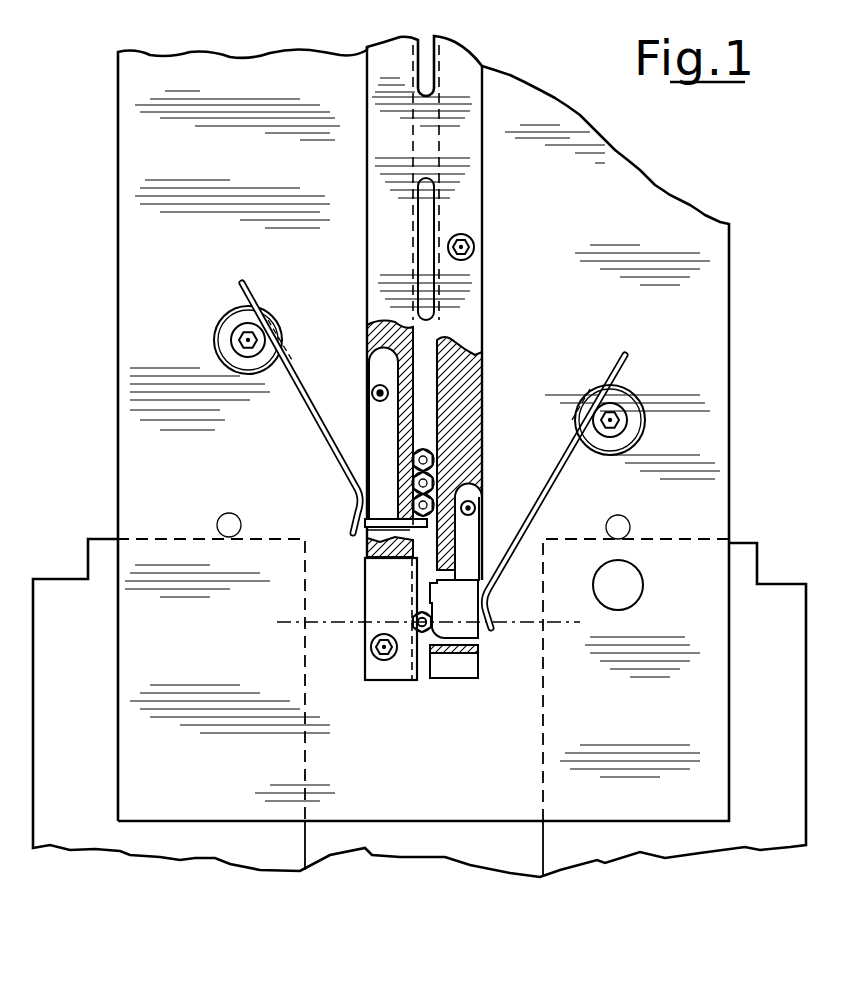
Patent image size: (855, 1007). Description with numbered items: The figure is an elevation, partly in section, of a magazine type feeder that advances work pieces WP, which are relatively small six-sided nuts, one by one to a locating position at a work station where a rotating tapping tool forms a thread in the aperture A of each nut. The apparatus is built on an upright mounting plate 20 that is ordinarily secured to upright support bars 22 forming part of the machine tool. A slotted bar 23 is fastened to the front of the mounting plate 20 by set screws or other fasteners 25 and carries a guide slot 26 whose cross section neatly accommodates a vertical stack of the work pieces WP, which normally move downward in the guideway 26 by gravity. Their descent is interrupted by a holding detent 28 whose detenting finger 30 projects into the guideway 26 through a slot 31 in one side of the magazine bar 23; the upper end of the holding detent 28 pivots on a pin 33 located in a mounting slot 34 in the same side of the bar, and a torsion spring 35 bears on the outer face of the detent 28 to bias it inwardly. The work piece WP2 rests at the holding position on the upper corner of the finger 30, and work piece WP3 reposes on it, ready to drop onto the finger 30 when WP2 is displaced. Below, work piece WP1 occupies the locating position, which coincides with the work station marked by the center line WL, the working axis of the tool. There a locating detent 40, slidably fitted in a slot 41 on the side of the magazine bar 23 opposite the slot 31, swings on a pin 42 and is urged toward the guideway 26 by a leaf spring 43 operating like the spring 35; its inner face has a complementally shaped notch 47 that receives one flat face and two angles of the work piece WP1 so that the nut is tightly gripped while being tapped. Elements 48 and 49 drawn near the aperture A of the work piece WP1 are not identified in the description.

The mounting plate 20 is at (297, 97).
The upright support bars 22 is at (65, 583).
The slotted bar 23 is at (470, 368).
The fasteners 25 is at (468, 236).
The guide slot 26 is at (430, 357).
The holding detent 28 is at (382, 483).
The detenting finger 30 is at (428, 524).
The slot 31 is at (372, 540).
The pin 33 is at (232, 312).
The mounting slot 34 is at (374, 367).
The torsion spring 35 is at (320, 418).
The locating detent 40 is at (463, 622).
The slot 41 is at (477, 641).
The pin 42 is at (474, 509).
The leaf spring 43 is at (553, 484).
The notch 47 is at (450, 656).
The nut 48 is at (410, 628).
The nut 49 is at (410, 618).
The work pieces WP is at (447, 440).
The work piece at locating position WP1 is at (423, 633).
The work piece at holding station WP2 is at (446, 490).
The work piece above holding station WP3 is at (440, 476).
The center line WL is at (294, 622).
The aperture A is at (412, 458).